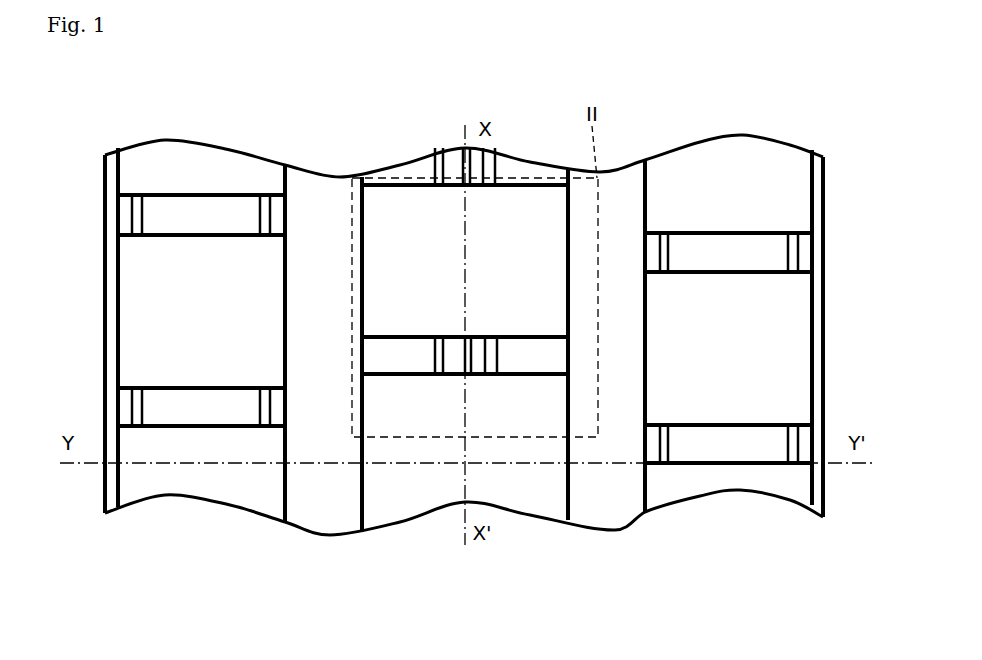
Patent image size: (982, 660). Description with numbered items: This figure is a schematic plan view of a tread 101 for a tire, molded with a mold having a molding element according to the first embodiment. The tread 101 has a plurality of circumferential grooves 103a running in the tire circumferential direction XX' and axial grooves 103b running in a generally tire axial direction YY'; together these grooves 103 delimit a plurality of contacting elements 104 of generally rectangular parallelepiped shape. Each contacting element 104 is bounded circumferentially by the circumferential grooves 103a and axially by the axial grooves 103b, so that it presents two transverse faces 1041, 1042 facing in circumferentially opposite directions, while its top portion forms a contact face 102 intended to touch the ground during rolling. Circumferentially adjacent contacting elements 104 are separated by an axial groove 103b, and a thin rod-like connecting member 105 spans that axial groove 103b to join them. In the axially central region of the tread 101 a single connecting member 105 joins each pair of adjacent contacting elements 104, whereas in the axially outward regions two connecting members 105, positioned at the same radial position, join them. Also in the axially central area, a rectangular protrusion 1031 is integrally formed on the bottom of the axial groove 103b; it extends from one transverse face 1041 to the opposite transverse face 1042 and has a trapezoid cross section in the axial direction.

The tread 101 is at (190, 108).
The contact face 102 is at (170, 155).
The gap between panels 103 is at (335, 493).
The circumferential groove 103a is at (610, 490).
The axial groove 103b is at (165, 212).
The rectangular protrusion 1031 is at (480, 170).
The contacting element 104 is at (120, 168).
The transverse face 1041 is at (193, 195).
The transverse face 1042 is at (203, 235).
The connecting member 105 is at (260, 402).